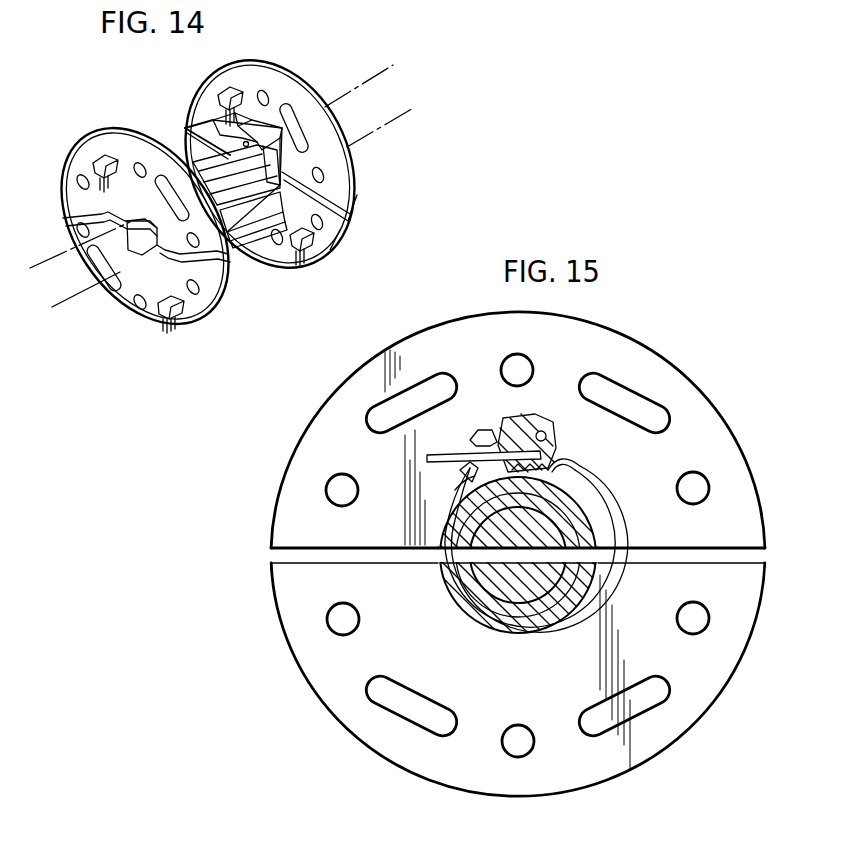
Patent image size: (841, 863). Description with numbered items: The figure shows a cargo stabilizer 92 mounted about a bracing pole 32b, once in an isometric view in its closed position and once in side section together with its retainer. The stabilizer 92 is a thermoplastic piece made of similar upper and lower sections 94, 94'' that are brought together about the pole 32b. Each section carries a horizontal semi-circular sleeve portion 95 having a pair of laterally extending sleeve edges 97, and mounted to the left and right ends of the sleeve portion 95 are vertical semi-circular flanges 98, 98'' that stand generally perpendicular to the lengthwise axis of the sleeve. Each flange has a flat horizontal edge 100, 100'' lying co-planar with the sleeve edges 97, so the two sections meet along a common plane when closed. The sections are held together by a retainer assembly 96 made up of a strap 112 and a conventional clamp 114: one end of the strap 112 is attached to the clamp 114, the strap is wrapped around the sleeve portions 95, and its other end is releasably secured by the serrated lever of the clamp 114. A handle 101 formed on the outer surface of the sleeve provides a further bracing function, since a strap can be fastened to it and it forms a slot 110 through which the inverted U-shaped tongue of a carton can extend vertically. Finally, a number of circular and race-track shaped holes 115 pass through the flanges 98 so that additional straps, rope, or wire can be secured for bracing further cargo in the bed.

In FIG. 14, the pole 32b is at (78, 298).
In FIG. 15, the pole 32b is at (495, 622).
In FIG. 14, the stabilizer 92 is at (70, 150).
In FIG. 15, the stabilizer 92 is at (440, 318).
In FIG. 14, the upper section 94 is at (129, 200).
In FIG. 15, the upper section 94 is at (491, 449).
In FIG. 14, the lower section 94'' is at (148, 291).
In FIG. 15, the lower section 94'' is at (496, 666).
In FIG. 15, the sleeve portion 95 is at (456, 520).
In FIG. 14, the retainer assembly 96 is at (298, 160).
In FIG. 15, the retainer assembly 96 is at (547, 415).
In FIG. 15, the sleeve edges 97 is at (582, 558).
In FIG. 14, the left vertical semi-circular flange 98 is at (79, 145).
In FIG. 15, the left vertical semi-circular flange 98 is at (511, 420).
In FIG. 14, the right vertical semi-circular flange 98'' is at (157, 340).
In FIG. 15, the right vertical semi-circular flange 98'' is at (498, 689).
In FIG. 15, the flat horizontal edge 100 is at (261, 572).
In FIG. 15, the flat horizontal edge 100'' is at (269, 534).
In FIG. 14, the handle 101 is at (240, 243).
In FIG. 14, the slot 110 is at (240, 238).
In FIG. 14, the strap 112 is at (284, 176).
In FIG. 15, the strap 112 is at (585, 480).
In FIG. 14, the clamp 114 is at (262, 128).
In FIG. 15, the clamp 114 is at (553, 437).
In FIG. 15, the holes 115 is at (508, 742).